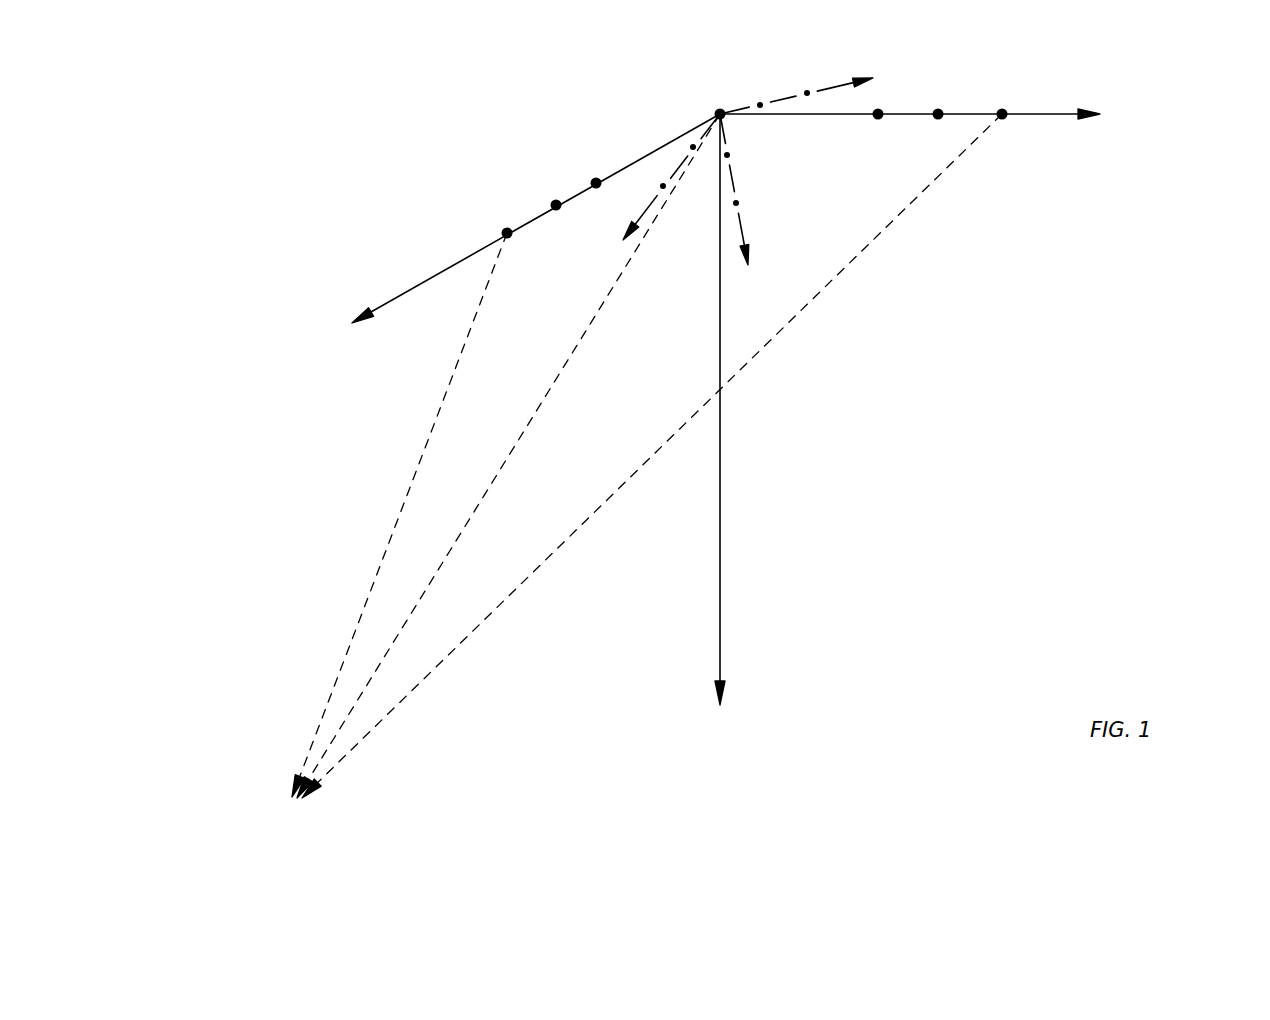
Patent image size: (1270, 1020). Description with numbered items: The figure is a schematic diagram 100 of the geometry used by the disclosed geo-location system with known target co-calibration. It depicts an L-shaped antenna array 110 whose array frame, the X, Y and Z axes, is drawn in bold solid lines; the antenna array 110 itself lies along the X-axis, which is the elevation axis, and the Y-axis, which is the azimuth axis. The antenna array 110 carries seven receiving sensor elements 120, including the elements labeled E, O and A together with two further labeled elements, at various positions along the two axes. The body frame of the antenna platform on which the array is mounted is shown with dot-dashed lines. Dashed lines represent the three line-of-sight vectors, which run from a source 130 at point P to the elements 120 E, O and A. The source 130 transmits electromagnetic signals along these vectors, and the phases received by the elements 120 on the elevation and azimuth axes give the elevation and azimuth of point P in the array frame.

The schematic diagram 100 is at (1020, 408).
The L-shaped antenna array 110 is at (665, 148).
The receiving sensor elements 120 is at (595, 182).
The source 130 is at (292, 797).